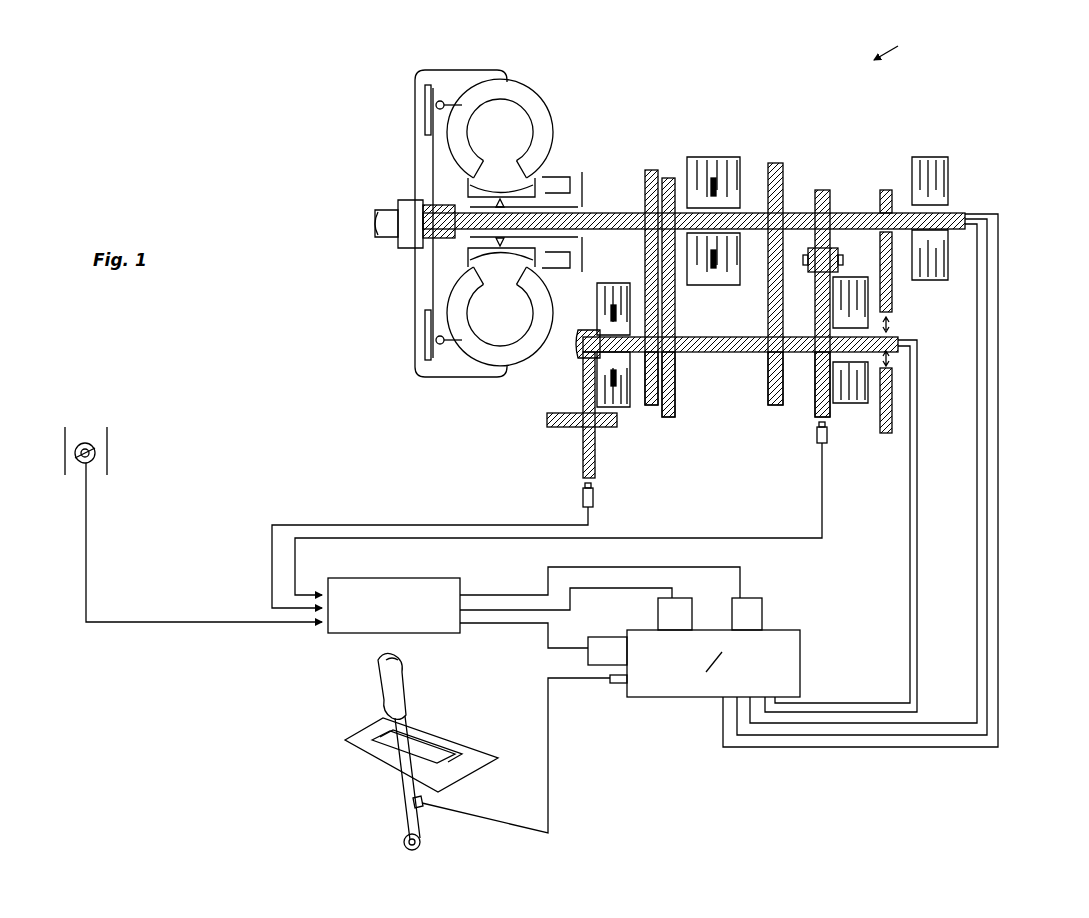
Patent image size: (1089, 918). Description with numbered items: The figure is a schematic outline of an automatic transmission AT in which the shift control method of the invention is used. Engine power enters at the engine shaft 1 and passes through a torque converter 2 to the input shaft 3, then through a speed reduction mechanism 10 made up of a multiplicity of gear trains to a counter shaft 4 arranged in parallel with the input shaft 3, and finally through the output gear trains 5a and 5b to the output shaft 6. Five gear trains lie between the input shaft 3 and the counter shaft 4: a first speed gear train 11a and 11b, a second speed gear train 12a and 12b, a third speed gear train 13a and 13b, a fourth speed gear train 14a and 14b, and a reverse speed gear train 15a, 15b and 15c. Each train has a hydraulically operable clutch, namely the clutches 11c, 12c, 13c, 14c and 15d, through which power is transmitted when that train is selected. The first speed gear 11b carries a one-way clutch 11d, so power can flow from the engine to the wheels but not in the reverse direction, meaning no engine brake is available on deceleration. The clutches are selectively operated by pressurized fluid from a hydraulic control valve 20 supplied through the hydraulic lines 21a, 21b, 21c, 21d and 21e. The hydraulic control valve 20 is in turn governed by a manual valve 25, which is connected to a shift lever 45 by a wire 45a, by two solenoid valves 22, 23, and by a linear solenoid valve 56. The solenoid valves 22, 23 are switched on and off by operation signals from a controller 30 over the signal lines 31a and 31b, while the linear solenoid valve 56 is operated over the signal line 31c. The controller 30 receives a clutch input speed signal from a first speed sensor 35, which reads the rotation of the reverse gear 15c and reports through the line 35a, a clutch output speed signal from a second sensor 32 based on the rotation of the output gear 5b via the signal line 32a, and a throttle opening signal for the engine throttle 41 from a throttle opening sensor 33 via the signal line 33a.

The engine shaft 1 is at (375, 240).
The torque converter 2 is at (528, 90).
The input shaft 3 is at (607, 212).
The counter shaft 4 is at (722, 353).
The output gear train 5a is at (578, 356).
The output gear 5b is at (583, 396).
The output shaft 6 is at (555, 430).
The speed reduction mechanism 10 is at (722, 130).
The first speed gear 11a is at (885, 189).
The first speed gear 11b is at (893, 292).
The hydraulic clutch 11c is at (930, 157).
The one-way clutch 11d is at (893, 335).
The second speed gear 12a is at (667, 177).
The second speed gear 12b is at (675, 415).
The hydraulic clutch 12c is at (705, 285).
The third speed gear 13a is at (644, 172).
The third speed gear 13b is at (652, 407).
The hydraulic clutch 13c is at (626, 410).
The fourth speed gear 14a is at (783, 168).
The fourth speed gear 14b is at (769, 405).
The hydraulic clutch 14c is at (735, 158).
The reverse speed gear 15a is at (823, 190).
The reverse speed gear 15b is at (833, 256).
The reverse gear 15c is at (815, 414).
The hydraulic clutch 15d is at (845, 404).
The hydraulic control valve 20 is at (801, 652).
The hydraulic line 21a is at (830, 703).
The hydraulic line 21b is at (918, 680).
The hydraulic line 21c is at (976, 630).
The hydraulic line 21d is at (988, 606).
The hydraulic line 21e is at (999, 665).
The solenoid valve 22 is at (682, 602).
The solenoid valve 23 is at (757, 603).
The manual valve 25 is at (618, 684).
The controller 30 is at (400, 580).
The signal line 31a is at (488, 595).
The signal line 31b is at (482, 611).
The signal line 31c is at (515, 624).
The second sensor 32 is at (595, 500).
The signal line 32a is at (508, 526).
The throttle opening sensor 33 is at (75, 465).
The signal line 33a is at (90, 552).
The first speed sensor 35 is at (815, 440).
The line 35a is at (688, 538).
The engine throttle 41 is at (95, 445).
The shift lever 45 is at (405, 703).
The wire 45a is at (552, 718).
The linear solenoid valve 56 is at (606, 637).
The transmission AT is at (900, 43).